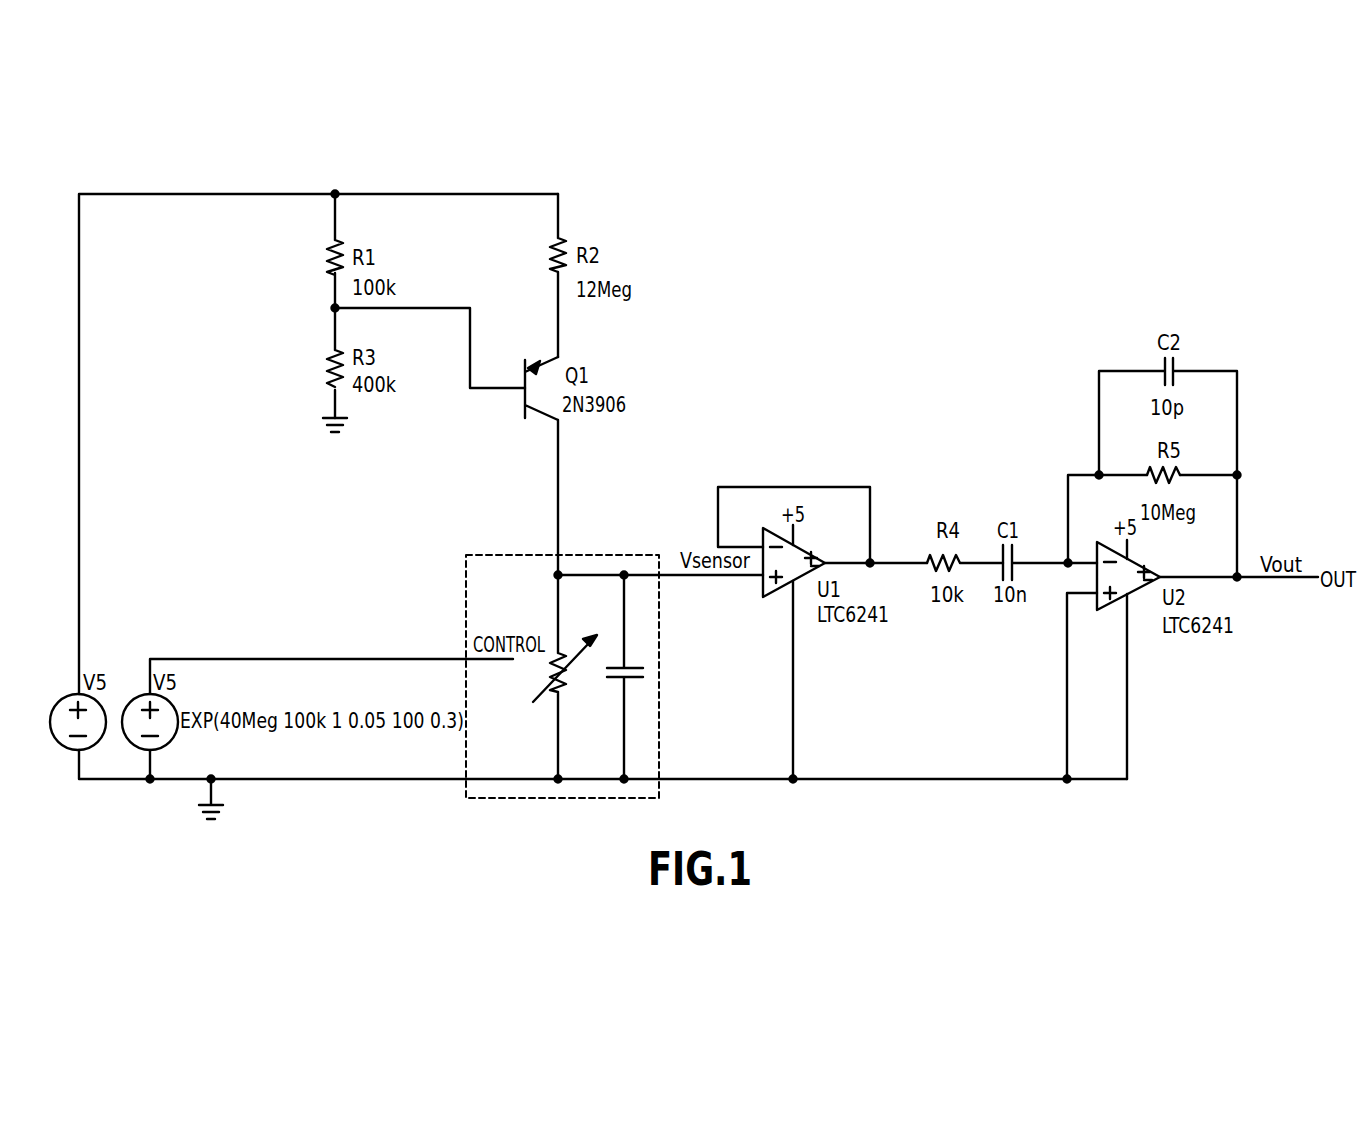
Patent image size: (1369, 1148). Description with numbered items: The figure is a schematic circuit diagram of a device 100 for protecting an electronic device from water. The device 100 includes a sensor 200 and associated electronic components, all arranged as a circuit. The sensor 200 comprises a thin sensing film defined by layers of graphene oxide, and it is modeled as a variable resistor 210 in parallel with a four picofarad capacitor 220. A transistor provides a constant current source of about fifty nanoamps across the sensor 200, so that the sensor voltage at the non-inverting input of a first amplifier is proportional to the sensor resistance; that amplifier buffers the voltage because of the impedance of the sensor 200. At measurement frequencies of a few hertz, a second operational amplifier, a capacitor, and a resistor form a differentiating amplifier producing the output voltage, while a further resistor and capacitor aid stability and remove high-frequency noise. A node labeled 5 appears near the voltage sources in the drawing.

The device 100 is at (1010, 170).
The sensor 200 is at (595, 691).
The variable resistor 210 is at (543, 673).
The capacitor 220 is at (659, 712).
The voltage source node 5 is at (114, 762).